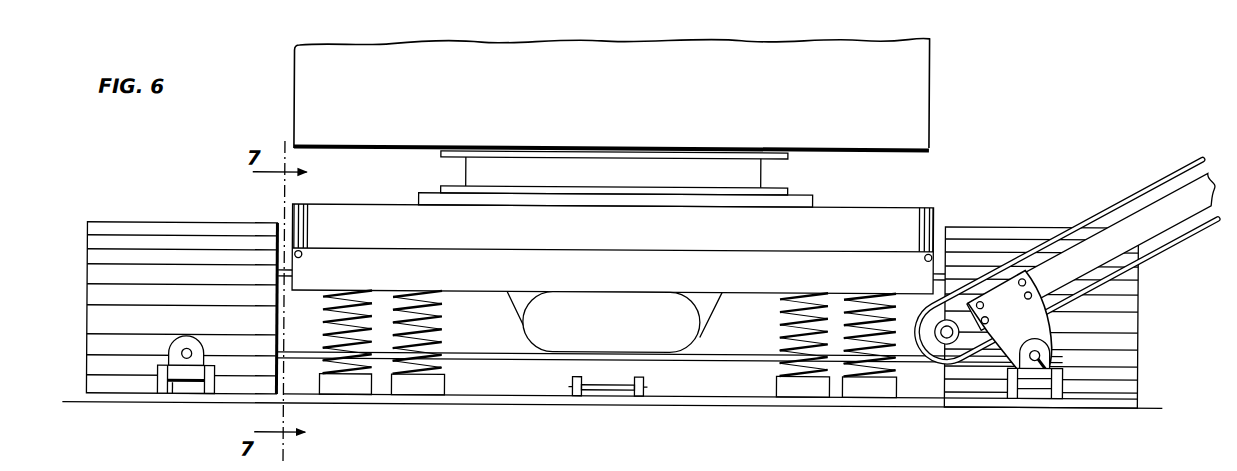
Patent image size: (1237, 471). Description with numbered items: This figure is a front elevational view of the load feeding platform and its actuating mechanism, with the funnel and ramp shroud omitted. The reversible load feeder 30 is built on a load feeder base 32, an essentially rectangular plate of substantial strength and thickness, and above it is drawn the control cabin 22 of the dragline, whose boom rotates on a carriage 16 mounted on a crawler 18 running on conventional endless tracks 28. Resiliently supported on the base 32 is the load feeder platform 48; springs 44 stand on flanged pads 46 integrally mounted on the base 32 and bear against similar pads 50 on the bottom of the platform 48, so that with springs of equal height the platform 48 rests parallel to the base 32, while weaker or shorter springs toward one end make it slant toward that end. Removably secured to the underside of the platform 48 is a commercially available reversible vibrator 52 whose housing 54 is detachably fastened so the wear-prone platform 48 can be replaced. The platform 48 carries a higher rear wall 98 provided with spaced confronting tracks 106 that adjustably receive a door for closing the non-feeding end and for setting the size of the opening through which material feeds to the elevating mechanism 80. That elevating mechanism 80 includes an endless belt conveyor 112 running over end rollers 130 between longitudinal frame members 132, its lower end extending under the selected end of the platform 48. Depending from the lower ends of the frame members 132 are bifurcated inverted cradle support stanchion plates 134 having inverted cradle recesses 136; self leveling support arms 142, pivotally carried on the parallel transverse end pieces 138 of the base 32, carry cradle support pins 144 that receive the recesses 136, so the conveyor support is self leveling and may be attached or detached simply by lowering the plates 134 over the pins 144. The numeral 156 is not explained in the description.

The control cabin 22 is at (930, 73).
The carriage 16 is at (765, 179).
The crawler 18 is at (816, 200).
The reversible load feeder 30 is at (637, 218).
The rear wall 98 is at (402, 206).
The tracks 106 is at (307, 228).
The endless tracks 28 is at (217, 233).
The pads 50 is at (338, 292).
The load feeder platform 48 is at (493, 294).
The springs 44 is at (438, 329).
The vibrator 52 is at (523, 340).
The housing 54 is at (680, 330).
The flanged pads 46 is at (410, 403).
The bolt 156 is at (610, 391).
The load feeder base 32 is at (752, 398).
The end rollers 130 is at (947, 332).
The cradle support stanchion plates 134 is at (1010, 338).
The inverted cradle recesses 136 is at (1043, 378).
The cradle support pins 144 is at (1047, 350).
The self leveling support arms 142 is at (193, 391).
The transverse end pieces 138 is at (213, 400).
The elevating mechanism 80 is at (1064, 289).
The belt conveyor 112 is at (1068, 266).
The longitudinal frame members 132 is at (1095, 251).